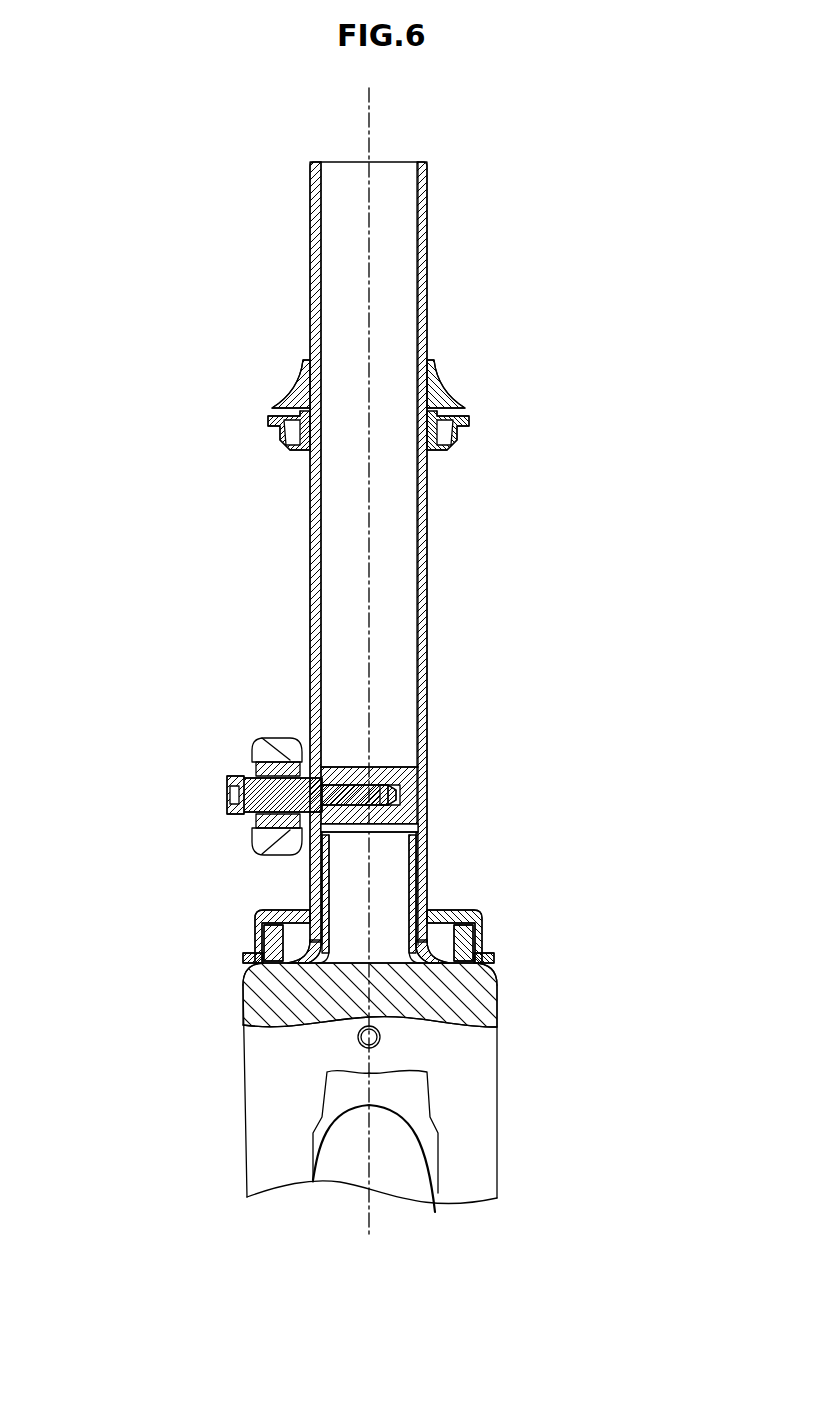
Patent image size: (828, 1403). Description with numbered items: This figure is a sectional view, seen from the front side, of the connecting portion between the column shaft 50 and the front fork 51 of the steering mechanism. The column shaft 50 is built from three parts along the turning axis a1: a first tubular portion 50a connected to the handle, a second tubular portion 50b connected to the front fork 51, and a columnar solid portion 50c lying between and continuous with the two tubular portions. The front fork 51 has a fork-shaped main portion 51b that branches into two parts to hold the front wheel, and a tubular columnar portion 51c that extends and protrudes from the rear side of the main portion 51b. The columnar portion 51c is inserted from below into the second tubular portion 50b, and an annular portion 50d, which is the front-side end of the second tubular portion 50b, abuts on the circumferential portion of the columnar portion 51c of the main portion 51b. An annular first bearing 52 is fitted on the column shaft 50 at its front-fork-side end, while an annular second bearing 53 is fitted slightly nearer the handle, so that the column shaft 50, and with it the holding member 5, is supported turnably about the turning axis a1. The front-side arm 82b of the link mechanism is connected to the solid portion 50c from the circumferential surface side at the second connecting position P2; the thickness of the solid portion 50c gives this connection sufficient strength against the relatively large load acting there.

The holding member 5 is at (520, 461).
The column shaft 50 is at (423, 597).
The first tubular portion 50a is at (428, 575).
The second tubular portion 50b is at (428, 886).
The solid portion 50c is at (420, 806).
The annular portion 50d is at (432, 952).
The front fork 51 is at (393, 1087).
The main portion 51b is at (256, 990).
The columnar portion 51c is at (338, 889).
The first bearing 52 is at (482, 934).
The second bearing 53 is at (446, 398).
The front-side arm 82b is at (256, 843).
The second connecting position P2 is at (230, 766).
The turning axis a1 is at (369, 125).